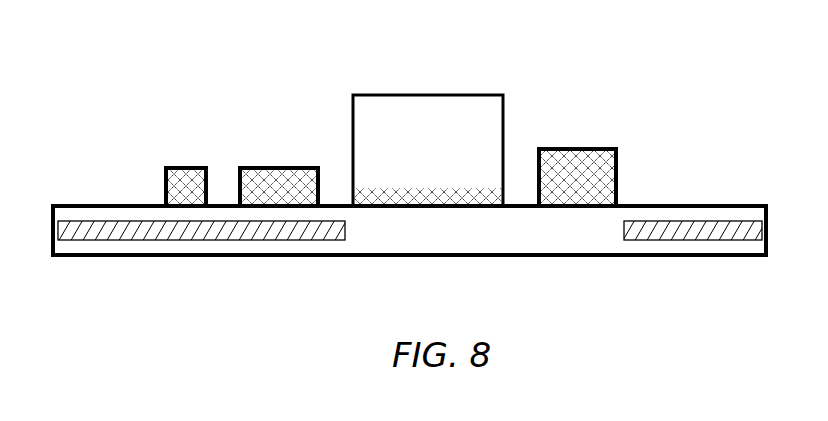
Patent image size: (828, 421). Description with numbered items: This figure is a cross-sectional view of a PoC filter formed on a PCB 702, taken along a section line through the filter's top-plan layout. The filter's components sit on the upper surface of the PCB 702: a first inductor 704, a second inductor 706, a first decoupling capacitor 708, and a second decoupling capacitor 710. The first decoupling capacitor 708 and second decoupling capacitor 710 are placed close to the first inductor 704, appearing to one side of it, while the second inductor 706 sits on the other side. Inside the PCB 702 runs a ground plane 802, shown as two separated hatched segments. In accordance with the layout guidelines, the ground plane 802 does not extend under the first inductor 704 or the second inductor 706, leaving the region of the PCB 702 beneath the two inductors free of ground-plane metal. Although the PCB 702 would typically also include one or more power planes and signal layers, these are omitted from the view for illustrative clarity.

The PCB 702 is at (693, 204).
The first inductor 704 is at (348, 78).
The second inductor 706 is at (568, 137).
The first decoupling capacitor 708 is at (243, 152).
The second decoupling capacitor 710 is at (162, 152).
The ground plane 802 is at (626, 240).